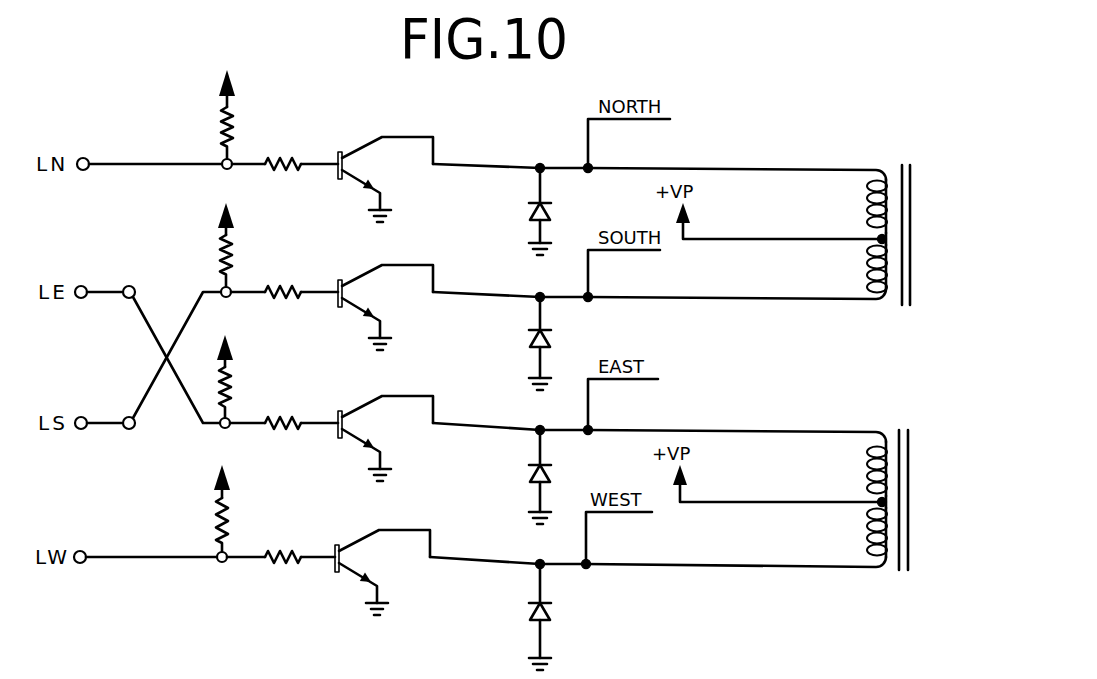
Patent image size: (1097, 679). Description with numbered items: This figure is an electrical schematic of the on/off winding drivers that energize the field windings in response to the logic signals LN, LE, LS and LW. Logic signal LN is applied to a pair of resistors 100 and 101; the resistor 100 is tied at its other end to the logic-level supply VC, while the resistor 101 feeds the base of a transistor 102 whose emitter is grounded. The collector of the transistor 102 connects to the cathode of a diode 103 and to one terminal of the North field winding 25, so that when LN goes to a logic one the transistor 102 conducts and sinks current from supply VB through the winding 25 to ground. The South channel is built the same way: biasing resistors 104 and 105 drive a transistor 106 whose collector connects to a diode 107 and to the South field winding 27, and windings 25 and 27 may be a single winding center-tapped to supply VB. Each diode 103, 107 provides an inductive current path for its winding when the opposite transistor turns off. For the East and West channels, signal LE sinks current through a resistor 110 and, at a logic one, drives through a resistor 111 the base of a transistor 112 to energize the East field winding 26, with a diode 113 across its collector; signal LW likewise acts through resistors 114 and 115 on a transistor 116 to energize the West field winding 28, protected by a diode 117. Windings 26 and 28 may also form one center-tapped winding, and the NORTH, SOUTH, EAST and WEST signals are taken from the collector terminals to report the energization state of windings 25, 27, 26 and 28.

The resistor 100 is at (221, 131).
The resistor 101 is at (285, 150).
The transistor 102 is at (344, 163).
The diode 103 is at (549, 214).
The biasing resistor 104 is at (220, 257).
The biasing resistor 105 is at (285, 281).
The transistor 106 is at (344, 291).
The diode 107 is at (549, 343).
The resistor 110 is at (246, 375).
The resistor 111 is at (284, 418).
The transistor 112 is at (344, 422).
The diode 113 is at (549, 480).
The resistor 114 is at (220, 523).
The resistor 115 is at (293, 548).
The transistor 116 is at (341, 556).
The diode 117 is at (549, 616).
The North field winding 25 is at (868, 206).
The South field winding 27 is at (868, 263).
The East field winding 26 is at (866, 467).
The West field winding 28 is at (866, 533).